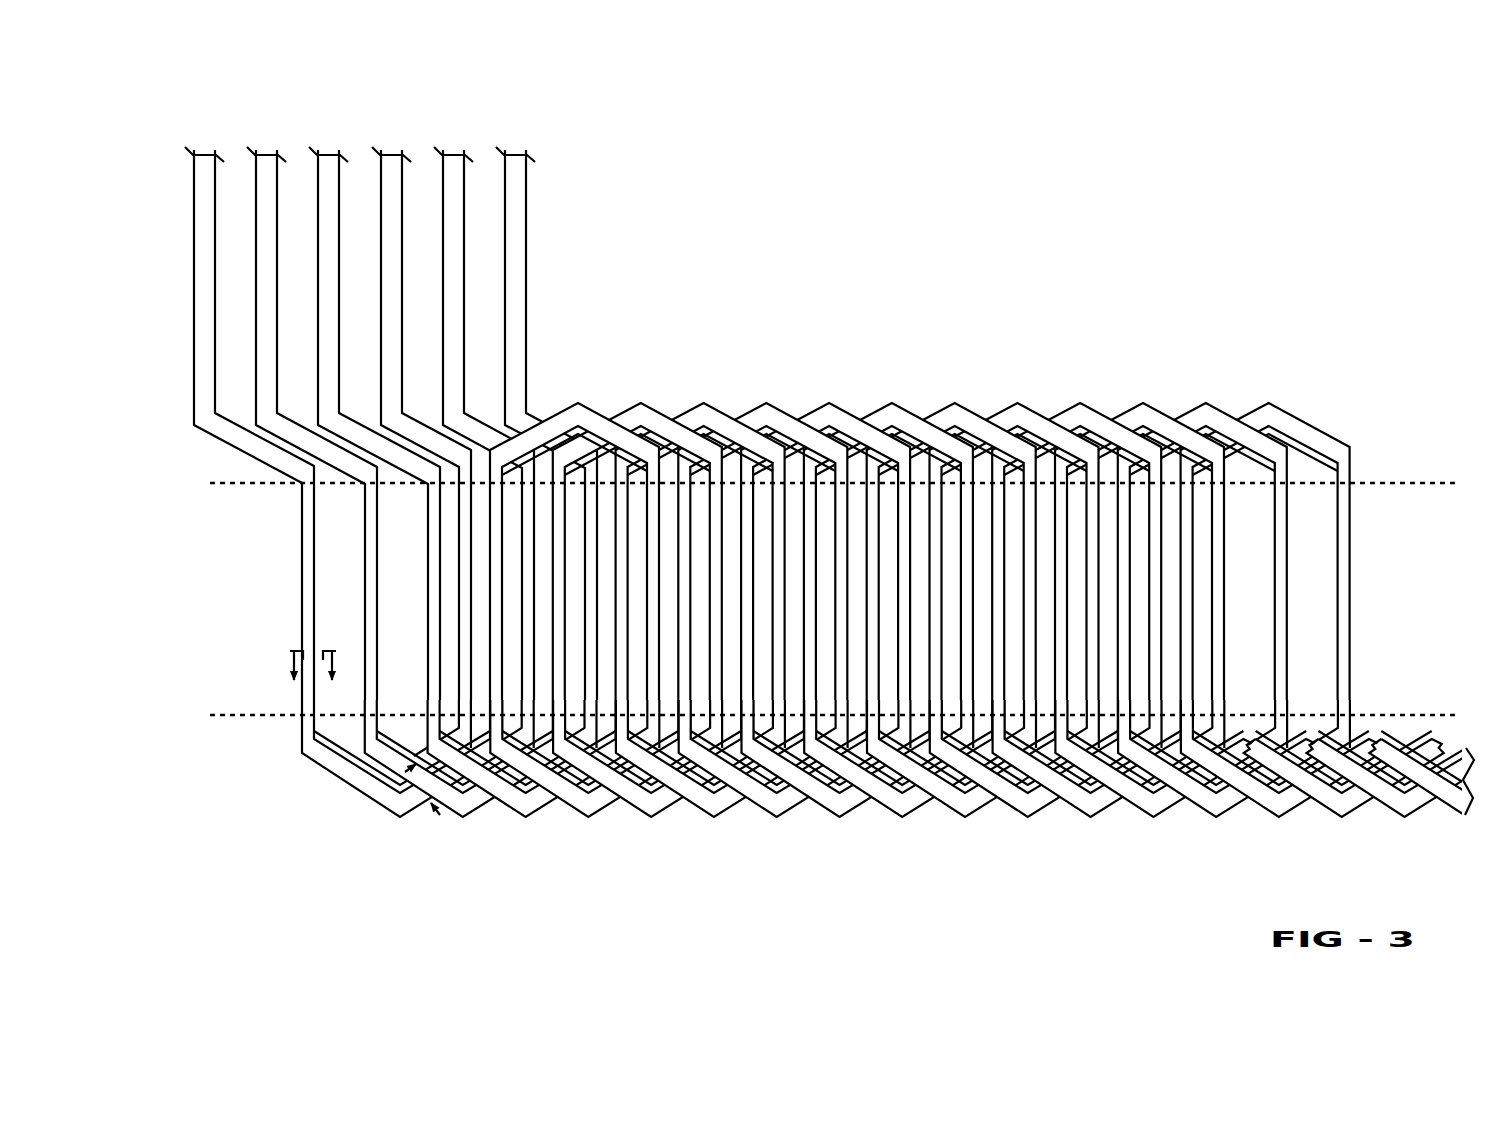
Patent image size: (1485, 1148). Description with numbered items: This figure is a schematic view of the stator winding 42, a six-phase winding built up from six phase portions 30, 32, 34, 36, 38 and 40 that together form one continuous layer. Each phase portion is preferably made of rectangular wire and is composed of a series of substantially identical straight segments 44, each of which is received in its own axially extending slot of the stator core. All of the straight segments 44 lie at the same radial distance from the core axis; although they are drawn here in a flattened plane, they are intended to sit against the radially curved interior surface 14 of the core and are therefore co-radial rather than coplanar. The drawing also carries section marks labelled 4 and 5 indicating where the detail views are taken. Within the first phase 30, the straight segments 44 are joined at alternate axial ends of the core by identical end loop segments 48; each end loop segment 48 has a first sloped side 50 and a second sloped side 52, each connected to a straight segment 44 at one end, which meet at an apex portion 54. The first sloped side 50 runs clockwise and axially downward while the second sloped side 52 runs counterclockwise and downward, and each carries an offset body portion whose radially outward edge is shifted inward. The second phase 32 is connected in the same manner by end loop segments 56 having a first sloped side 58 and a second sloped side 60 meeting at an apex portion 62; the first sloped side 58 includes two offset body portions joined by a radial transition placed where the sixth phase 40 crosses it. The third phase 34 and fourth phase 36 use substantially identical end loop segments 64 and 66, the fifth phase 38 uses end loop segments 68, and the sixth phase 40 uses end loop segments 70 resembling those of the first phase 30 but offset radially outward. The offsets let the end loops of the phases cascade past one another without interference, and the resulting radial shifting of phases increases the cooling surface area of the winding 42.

The interior surface 14 is at (233, 578).
The first phase portion 30 is at (206, 167).
The second phase portion 32 is at (268, 167).
The third phase portion 34 is at (330, 167).
The fourth phase portion 36 is at (393, 167).
The fifth phase portion 38 is at (455, 167).
The sixth phase portion 40 is at (517, 167).
The stator winding 42 is at (889, 266).
The straight segments 44 is at (317, 618).
The end loop segments 48 is at (955, 400).
The first sloped side 50 is at (366, 785).
The second sloped side 52 is at (409, 822).
The apex portion 54 is at (402, 820).
The end loop segments 56 is at (642, 400).
The first sloped side 58 is at (585, 447).
The second sloped side 60 is at (697, 443).
The apex portion 62 is at (647, 417).
The end loop segments 64 is at (704, 400).
The end loop segments 66 is at (767, 400).
The end loop segments 68 is at (830, 400).
The end loop segments 70 is at (893, 400).
The section line 4- 4 is at (313, 665).
The section line 5- 5 is at (417, 794).